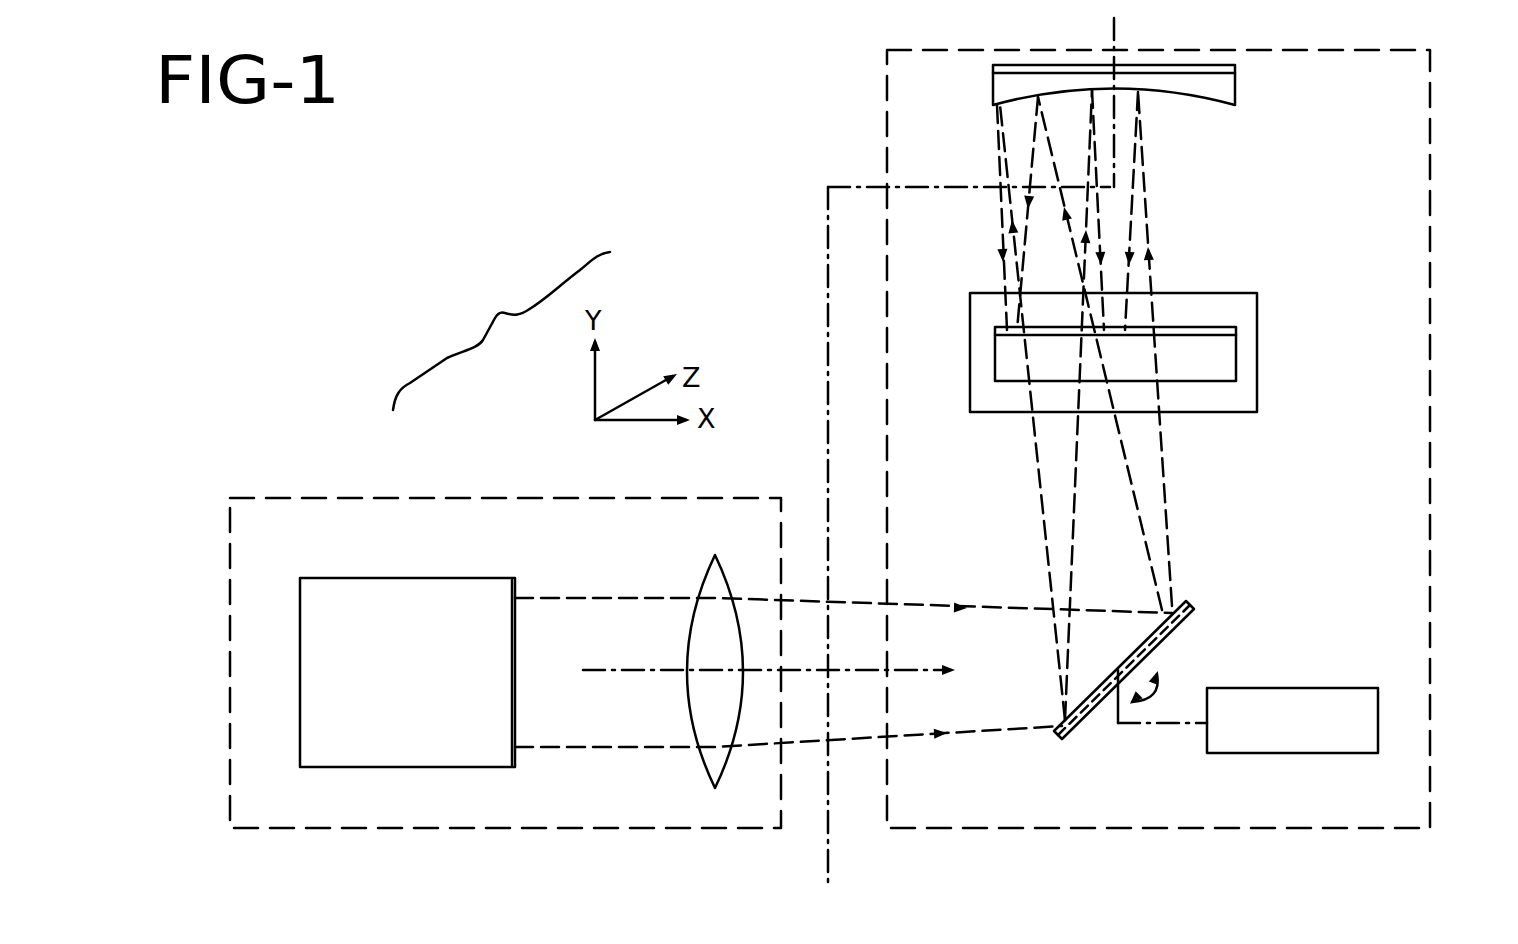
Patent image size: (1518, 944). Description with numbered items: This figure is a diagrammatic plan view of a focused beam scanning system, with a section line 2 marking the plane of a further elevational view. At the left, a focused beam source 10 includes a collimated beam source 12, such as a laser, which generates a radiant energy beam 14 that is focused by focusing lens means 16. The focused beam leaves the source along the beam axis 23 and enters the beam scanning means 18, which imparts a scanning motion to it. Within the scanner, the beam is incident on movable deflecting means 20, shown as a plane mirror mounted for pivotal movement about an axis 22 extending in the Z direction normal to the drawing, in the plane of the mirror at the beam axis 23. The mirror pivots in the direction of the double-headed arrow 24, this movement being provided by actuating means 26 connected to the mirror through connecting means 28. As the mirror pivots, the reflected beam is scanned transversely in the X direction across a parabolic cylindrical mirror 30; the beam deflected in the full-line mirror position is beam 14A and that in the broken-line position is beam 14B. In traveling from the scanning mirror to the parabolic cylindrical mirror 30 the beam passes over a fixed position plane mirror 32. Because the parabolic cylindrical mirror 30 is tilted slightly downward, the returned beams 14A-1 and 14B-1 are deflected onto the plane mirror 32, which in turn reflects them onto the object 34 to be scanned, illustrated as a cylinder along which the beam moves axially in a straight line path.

The section line 2 is at (1140, 30).
The focused beam source 10 is at (690, 497).
The collimated beam source 12 is at (356, 577).
The radiant energy beam 14 is at (608, 596).
The deflected beam at full-line mirror position 14A is at (1077, 490).
The deflected beam at broken-line mirror position 14B is at (1118, 438).
The reflected beam from parabolic cylindrical mirror 14A-1 is at (1100, 218).
The reflected beam from parabolic cylindrical mirror 14B-1 is at (1027, 230).
The focusing lens means 16 is at (708, 563).
The beam scanning means 18 is at (887, 130).
The movable deflecting means 20 is at (1195, 616).
The pivot axis 22 is at (1118, 668).
The beam axis 23 is at (925, 669).
The double-headed arrow 24 is at (1168, 690).
The actuating means 26 is at (1305, 757).
The connecting means 28 is at (1178, 727).
The parabolic cylindrical mirror 30 is at (1237, 85).
The fixed position plane mirror 32 is at (1237, 360).
The object to be scanned 34 is at (1258, 300).